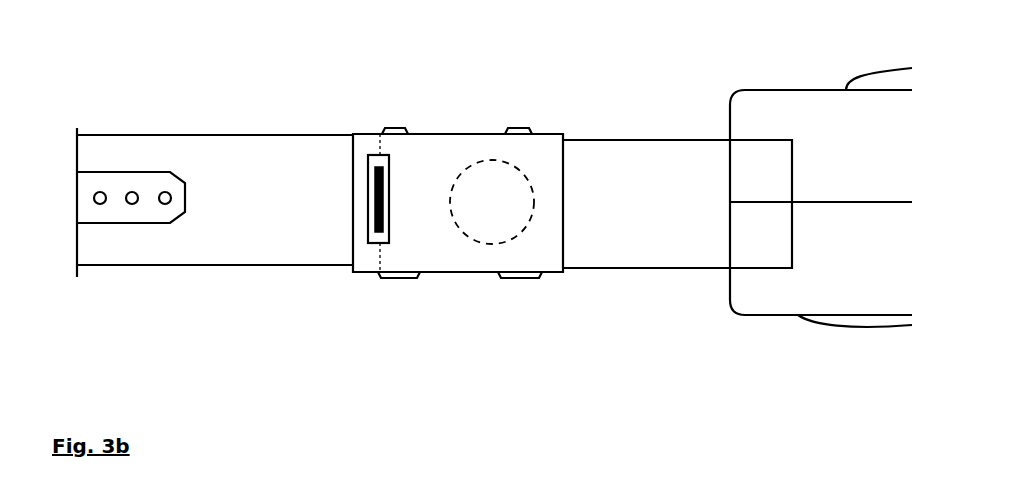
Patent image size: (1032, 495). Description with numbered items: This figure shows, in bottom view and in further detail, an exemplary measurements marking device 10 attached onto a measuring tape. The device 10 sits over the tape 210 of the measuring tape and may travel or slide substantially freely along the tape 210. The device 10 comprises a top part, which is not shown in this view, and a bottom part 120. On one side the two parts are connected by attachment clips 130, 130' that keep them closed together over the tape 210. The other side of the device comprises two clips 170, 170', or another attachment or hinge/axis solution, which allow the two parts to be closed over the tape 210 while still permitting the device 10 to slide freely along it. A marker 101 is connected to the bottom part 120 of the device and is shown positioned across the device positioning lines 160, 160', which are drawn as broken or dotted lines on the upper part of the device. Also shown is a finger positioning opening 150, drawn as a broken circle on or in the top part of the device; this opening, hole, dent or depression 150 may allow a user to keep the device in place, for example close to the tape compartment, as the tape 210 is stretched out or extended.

The measurements marking device 10 is at (555, 132).
The marker 101 is at (390, 172).
The bottom part 120 is at (542, 243).
The attachment clip 130 is at (467, 86).
The attachment clip 130' is at (340, 85).
The finger positioning opening 150 is at (514, 164).
The device positioning line 160 is at (317, 205).
The device positioning line 160' is at (315, 162).
The clip 170 is at (472, 323).
The clip 170' is at (351, 323).
The tape 210 is at (147, 270).